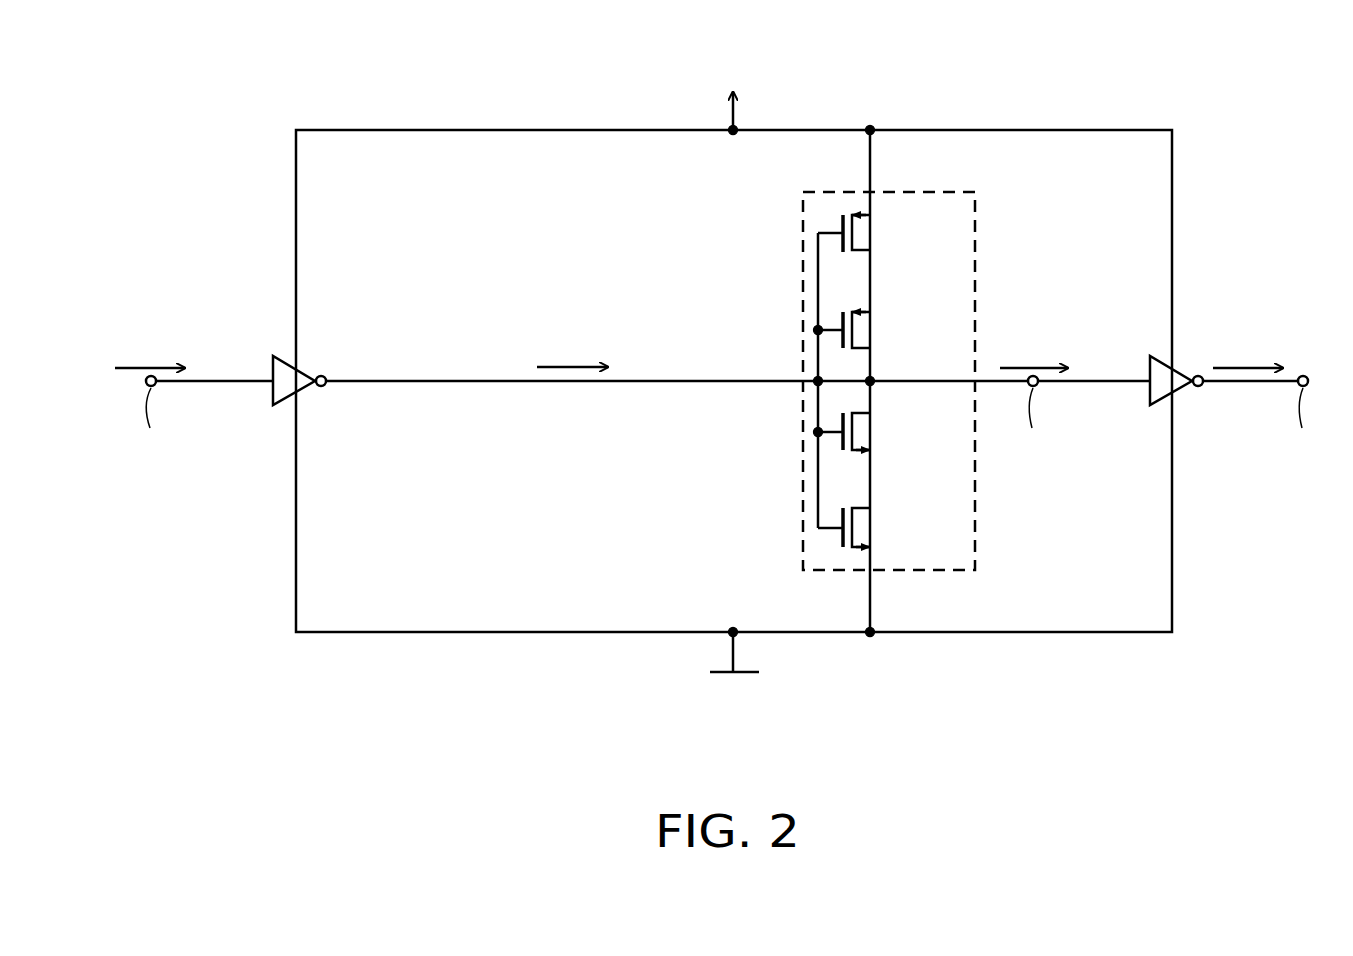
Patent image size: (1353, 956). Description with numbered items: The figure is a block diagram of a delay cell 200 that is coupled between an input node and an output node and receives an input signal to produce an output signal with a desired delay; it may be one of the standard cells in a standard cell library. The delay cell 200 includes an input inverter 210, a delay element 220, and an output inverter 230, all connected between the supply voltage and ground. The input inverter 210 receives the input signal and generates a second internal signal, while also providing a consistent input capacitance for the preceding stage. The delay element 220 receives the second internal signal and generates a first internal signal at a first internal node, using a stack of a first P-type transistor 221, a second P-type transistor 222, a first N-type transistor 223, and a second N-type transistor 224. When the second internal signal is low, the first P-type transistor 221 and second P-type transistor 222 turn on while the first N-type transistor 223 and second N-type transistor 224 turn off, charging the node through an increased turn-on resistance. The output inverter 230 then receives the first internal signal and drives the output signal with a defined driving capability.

The delay cell 200 is at (988, 740).
The input inverter 210 is at (272, 397).
The delay element 220 is at (945, 190).
The first P-type transistor 221 is at (868, 236).
The second P-type transistor 222 is at (868, 333).
The first N-type transistor 223 is at (868, 435).
The second N-type transistor 224 is at (868, 531).
The output inverter 230 is at (1148, 397).